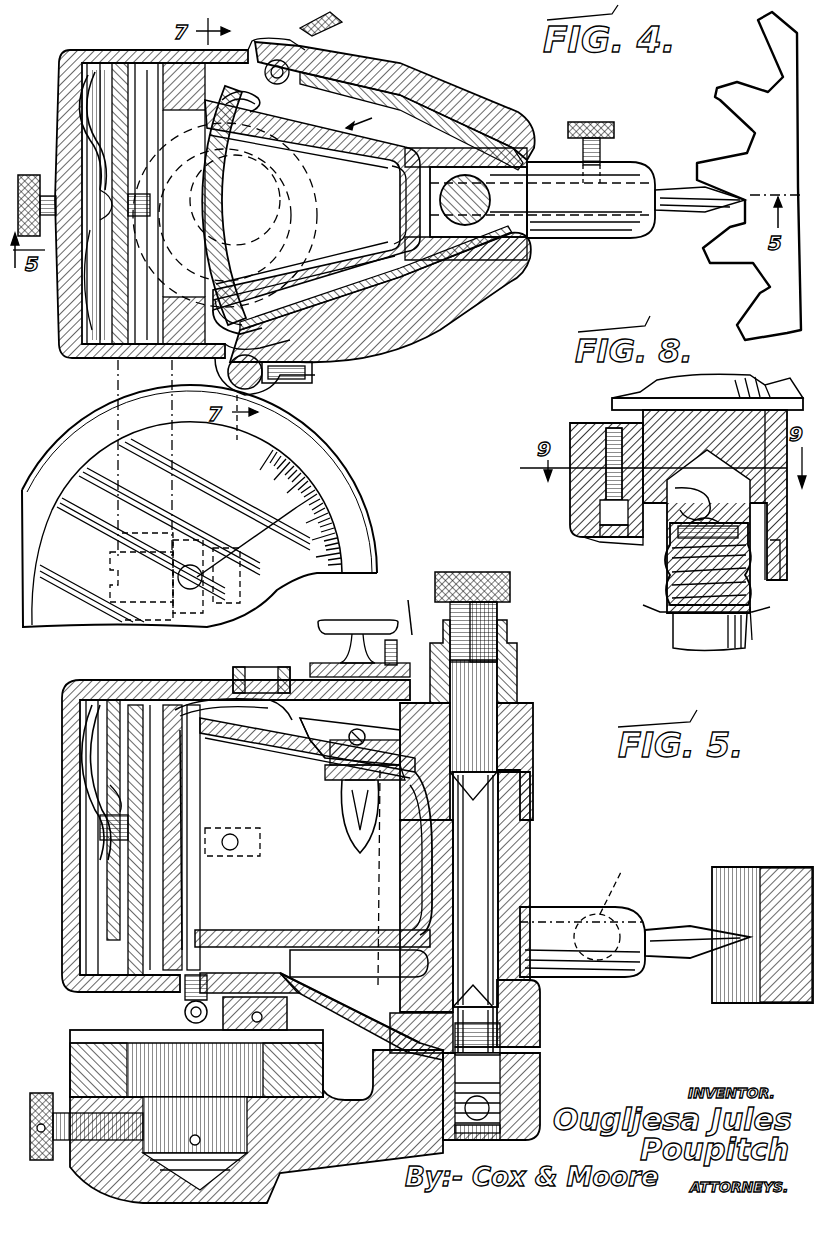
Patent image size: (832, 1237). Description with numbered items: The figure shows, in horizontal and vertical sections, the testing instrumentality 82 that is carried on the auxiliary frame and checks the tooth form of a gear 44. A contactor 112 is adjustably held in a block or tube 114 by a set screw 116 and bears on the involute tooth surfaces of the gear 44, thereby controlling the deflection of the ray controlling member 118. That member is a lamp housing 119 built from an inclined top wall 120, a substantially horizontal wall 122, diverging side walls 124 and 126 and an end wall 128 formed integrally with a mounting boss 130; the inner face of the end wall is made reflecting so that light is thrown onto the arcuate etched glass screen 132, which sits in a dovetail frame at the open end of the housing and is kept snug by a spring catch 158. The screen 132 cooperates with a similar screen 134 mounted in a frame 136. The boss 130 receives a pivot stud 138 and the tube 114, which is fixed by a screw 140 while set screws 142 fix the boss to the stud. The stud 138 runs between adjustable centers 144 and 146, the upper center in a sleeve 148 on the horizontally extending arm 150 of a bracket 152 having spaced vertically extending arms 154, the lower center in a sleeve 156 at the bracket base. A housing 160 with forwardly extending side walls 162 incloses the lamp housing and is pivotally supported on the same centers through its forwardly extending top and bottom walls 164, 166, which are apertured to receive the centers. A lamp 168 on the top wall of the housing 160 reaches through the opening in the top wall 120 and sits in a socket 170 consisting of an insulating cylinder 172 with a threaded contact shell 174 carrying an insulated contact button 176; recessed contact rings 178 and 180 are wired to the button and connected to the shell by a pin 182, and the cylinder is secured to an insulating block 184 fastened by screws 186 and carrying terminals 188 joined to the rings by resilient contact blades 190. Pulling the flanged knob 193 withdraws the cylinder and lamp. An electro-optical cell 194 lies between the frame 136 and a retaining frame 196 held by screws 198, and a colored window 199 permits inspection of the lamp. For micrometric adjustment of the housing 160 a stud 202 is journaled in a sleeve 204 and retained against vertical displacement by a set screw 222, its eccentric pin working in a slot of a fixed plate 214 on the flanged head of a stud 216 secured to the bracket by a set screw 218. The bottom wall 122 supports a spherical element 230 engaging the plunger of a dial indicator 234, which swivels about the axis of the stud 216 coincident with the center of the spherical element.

In FIG. 4, the ratchet wheel 44 is at (735, 90).
In FIG. 5, the ratchet wheel 44 is at (772, 868).
In FIG. 5, the testing instrumentality 82 is at (413, 598).
In FIG. 4, the contactor 112 is at (660, 212).
In FIG. 5, the contactor 112 is at (660, 925).
In FIG. 4, the block or tube 114 is at (568, 240).
In FIG. 5, the block or tube 114 is at (555, 907).
In FIG. 4, the set screw 116 is at (608, 120).
In FIG. 5, the set screw 116 is at (617, 902).
In FIG. 4, the ray controlling member 118 is at (233, 70).
In FIG. 4, the lamp housing 119 is at (376, 115).
In FIG. 5, the lamp housing 119 is at (361, 1020).
In FIG. 5, the inclined top wall 120 is at (262, 745).
In FIG. 5, the horizontal wall 122 is at (300, 942).
In FIG. 4, the side wall 124 is at (340, 150).
In FIG. 4, the side wall 126 is at (330, 270).
In FIG. 4, the end wall 128 is at (402, 225).
In FIG. 5, the end wall 128 is at (420, 860).
In FIG. 4, the mounting boss 130 is at (527, 167).
In FIG. 5, the mounting boss 130 is at (510, 855).
In FIG. 4, the ray controlling screen 132 is at (200, 200).
In FIG. 5, the ray controlling screen 132 is at (200, 902).
In FIG. 4, the screen 134 is at (232, 255).
In FIG. 5, the screen 134 is at (185, 875).
In FIG. 4, the frame 136 is at (258, 328).
In FIG. 5, the frame 136 is at (168, 702).
In FIG. 4, the pivot stud 138 is at (470, 175).
In FIG. 5, the pivot stud 138 is at (505, 810).
In FIG. 5, the screw 140 is at (300, 960).
In FIG. 5, the set screws 142 is at (383, 868).
In FIG. 5, the adjustable center 144 is at (480, 712).
In FIG. 5, the adjustable center 146 is at (510, 1038).
In FIG. 5, the sleeve 148 is at (500, 630).
In FIG. 5, the horizontally extending arm 150 is at (517, 680).
In FIG. 5, the bracket 152 is at (530, 1100).
In FIG. 4, the vertically extending arms 154 is at (405, 68).
In FIG. 5, the sleeve 156 is at (520, 1075).
In FIG. 4, the spring catch 158 is at (262, 104).
In FIG. 5, the spring catch 158 is at (233, 758).
In FIG. 4, the housing 160 is at (335, 62).
In FIG. 5, the housing 160 is at (193, 702).
In FIG. 4, the side walls 162 is at (430, 88).
In FIG. 5, the bearing body 164 is at (535, 732).
In FIG. 5, the lower bearing body 166 is at (520, 1020).
In FIG. 8, the lamp 168 is at (717, 645).
In FIG. 5, the lamp 168 is at (352, 840).
In FIG. 8, the socket 170 is at (635, 578).
In FIG. 5, the socket 170 is at (325, 780).
In FIG. 8, the insulating cylinder 172 is at (773, 607).
In FIG. 8, the contact shell 174 is at (645, 612).
In FIG. 8, the contact button 176 is at (702, 499).
In FIG. 8, the contact ring 178 is at (582, 490).
In FIG. 8, the contact ring 180 is at (776, 585).
In FIG. 8, the pin 182 is at (648, 552).
In FIG. 8, the insulating block 184 is at (583, 525).
In FIG. 5, the insulating block 184 is at (320, 700).
In FIG. 8, the screws 186 is at (605, 538).
In FIG. 5, the terminals 188 is at (316, 713).
In FIG. 5, the contact blades 190 is at (352, 795).
In FIG. 8, the flanged knob 193 is at (722, 386).
In FIG. 5, the flanged knob 193 is at (405, 640).
In FIG. 4, the electro-optical cell 194 is at (127, 62).
In FIG. 5, the electro-optical cell 194 is at (120, 690).
In FIG. 4, the retaining frame 196 is at (98, 360).
In FIG. 5, the retaining frame 196 is at (70, 980).
In FIG. 4, the screws 198 is at (86, 92).
In FIG. 5, the screws 198 is at (96, 782).
In FIG. 5, the window 199 is at (262, 665).
In FIG. 4, the stud 202 is at (262, 390).
In FIG. 4, the sleeve 204 is at (262, 345).
In FIG. 5, the fixed plate 214 is at (250, 997).
In FIG. 5, the stud 216 is at (135, 1055).
In FIG. 4, the set screw 218 is at (28, 175).
In FIG. 5, the set screw 218 is at (42, 1160).
In FIG. 4, the set screw 222 is at (314, 374).
In FIG. 5, the spherical element 230 is at (184, 1012).
In FIG. 4, the dial indicator 234 is at (255, 445).